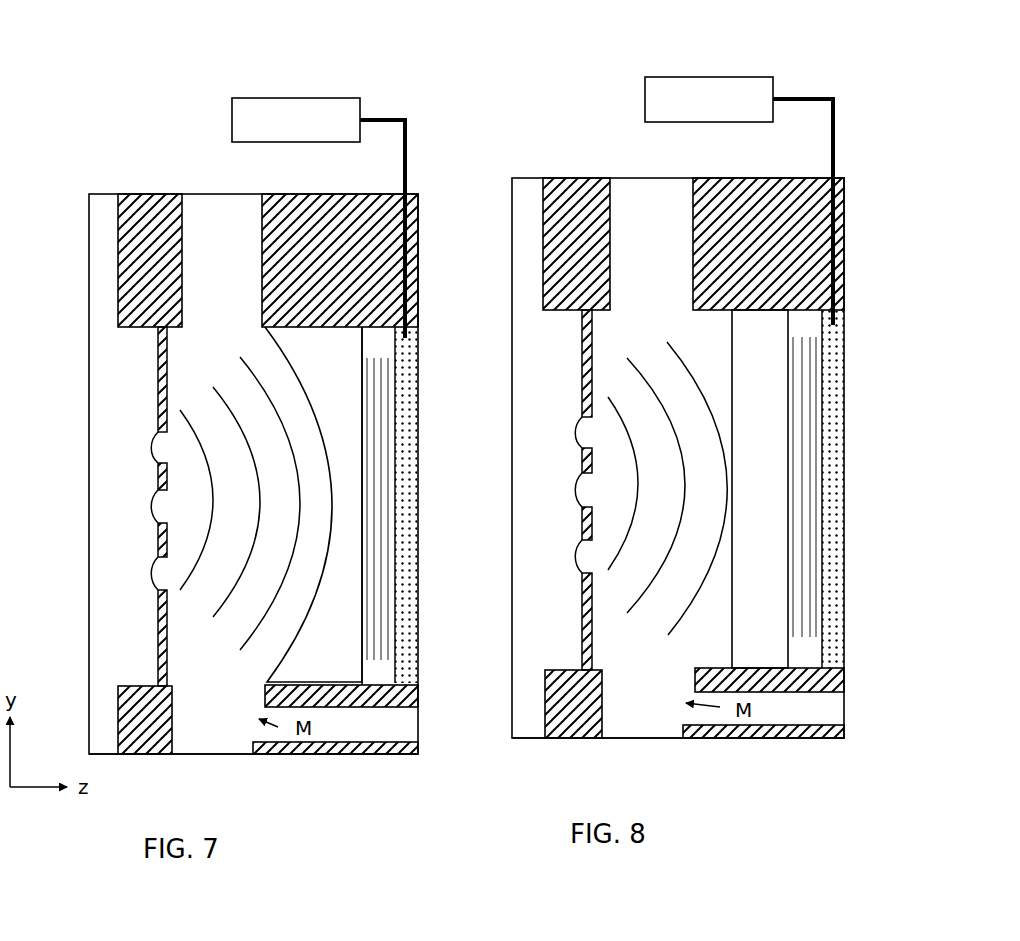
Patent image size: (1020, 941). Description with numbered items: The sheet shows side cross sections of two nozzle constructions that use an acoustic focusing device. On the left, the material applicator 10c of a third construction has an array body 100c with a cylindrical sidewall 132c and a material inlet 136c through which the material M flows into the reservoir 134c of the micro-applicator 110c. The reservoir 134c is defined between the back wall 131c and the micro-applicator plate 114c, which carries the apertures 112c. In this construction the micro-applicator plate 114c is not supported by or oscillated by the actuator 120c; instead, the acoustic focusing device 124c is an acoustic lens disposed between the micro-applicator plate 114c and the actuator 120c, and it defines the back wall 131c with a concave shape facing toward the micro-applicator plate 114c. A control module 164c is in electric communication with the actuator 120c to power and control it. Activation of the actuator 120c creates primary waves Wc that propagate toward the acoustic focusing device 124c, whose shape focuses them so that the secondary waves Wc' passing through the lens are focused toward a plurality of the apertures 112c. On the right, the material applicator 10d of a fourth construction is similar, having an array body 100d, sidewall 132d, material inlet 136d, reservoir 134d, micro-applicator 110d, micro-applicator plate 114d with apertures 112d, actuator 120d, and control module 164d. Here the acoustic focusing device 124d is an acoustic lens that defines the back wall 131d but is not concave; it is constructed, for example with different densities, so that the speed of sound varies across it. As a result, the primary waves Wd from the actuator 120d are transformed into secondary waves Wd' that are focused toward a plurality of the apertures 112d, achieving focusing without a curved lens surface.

In FIG. 7, the material applicator 10c is at (136, 190).
In FIG. 7, the array body 100c is at (182, 190).
In FIG. 7, the sidewall 132c is at (165, 342).
In FIG. 7, the reservoir 134c is at (175, 353).
In FIG. 7, the micro-applicator plate 114c is at (155, 355).
In FIG. 7, the apertures 112c is at (157, 432).
In FIG. 7, the micro-applicator 110c is at (110, 688).
In FIG. 7, the acoustic focusing device 124c is at (345, 480).
In FIG. 7, the secondary waves Wc' is at (366, 506).
In FIG. 7, the primary waves Wc is at (414, 410).
In FIG. 7, the actuator 120c is at (407, 577).
In FIG. 7, the back wall 131c is at (302, 630).
In FIG. 7, the material inlet 136c is at (386, 718).
In FIG. 7, the control module 164c is at (232, 117).
In FIG. 8, the material applicator 10d is at (530, 185).
In FIG. 8, the array body 100d is at (609, 176).
In FIG. 8, the sidewall 132d is at (585, 325).
In FIG. 8, the reservoir 134d is at (595, 335).
In FIG. 8, the micro-applicator plate 114d is at (578, 340).
In FIG. 8, the apertures 112d is at (581, 417).
In FIG. 8, the micro-applicator 110d is at (555, 627).
In FIG. 8, the acoustic focusing device 124d is at (770, 467).
In FIG. 8, the secondary waves Wd' is at (795, 489).
In FIG. 8, the primary waves Wd is at (843, 398).
In FIG. 8, the actuator 120d is at (835, 568).
In FIG. 8, the back wall 131d is at (728, 613).
In FIG. 8, the material inlet 136d is at (812, 703).
In FIG. 8, the control module 164d is at (645, 95).